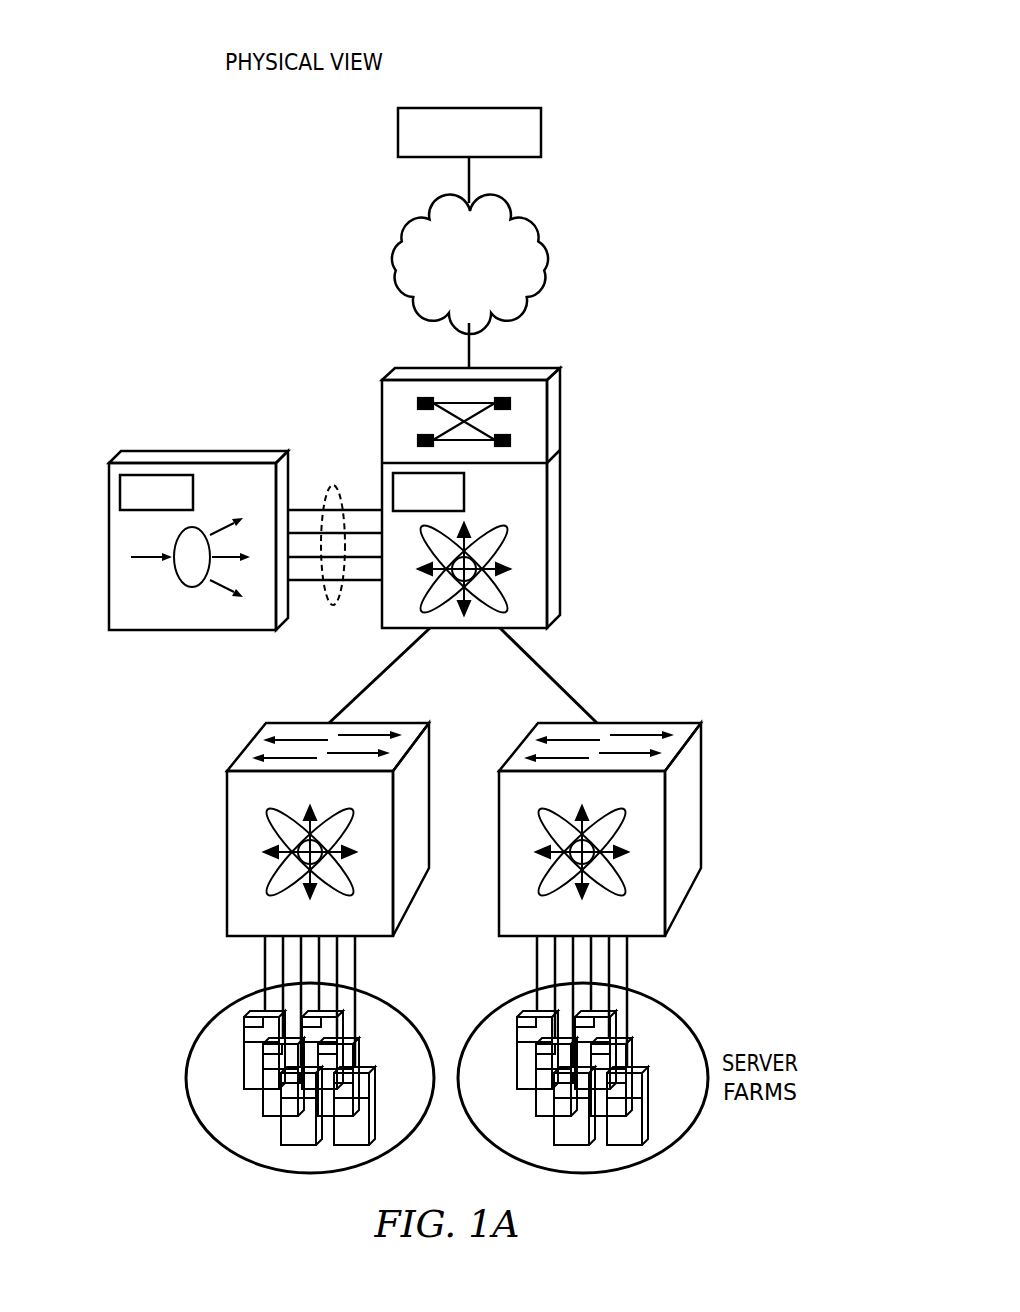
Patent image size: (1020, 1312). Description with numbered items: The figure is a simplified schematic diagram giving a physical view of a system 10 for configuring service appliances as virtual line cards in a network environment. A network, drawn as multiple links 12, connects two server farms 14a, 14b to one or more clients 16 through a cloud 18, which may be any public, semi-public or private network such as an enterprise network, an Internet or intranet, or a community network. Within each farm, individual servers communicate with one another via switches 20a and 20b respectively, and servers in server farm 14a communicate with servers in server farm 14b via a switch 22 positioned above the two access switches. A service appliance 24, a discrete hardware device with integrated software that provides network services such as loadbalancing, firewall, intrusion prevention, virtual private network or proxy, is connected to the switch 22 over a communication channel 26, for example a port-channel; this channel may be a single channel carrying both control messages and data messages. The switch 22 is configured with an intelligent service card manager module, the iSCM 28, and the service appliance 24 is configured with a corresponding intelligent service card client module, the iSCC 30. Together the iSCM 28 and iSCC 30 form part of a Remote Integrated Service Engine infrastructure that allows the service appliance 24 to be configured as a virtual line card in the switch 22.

The system 10 is at (516, 56).
The links 12 is at (574, 672).
The server farm 14a is at (205, 1135).
The server farm 14b is at (690, 1135).
The clients 16 is at (541, 133).
The cloud 18 is at (553, 262).
The switch 20a is at (228, 841).
The switch 20b is at (690, 840).
The switch 22 is at (507, 498).
The service appliance 24 is at (163, 540).
The communication channel 26 is at (334, 486).
The intelligent service card manager module 28 is at (464, 492).
The intelligent service card client module 30 is at (193, 492).